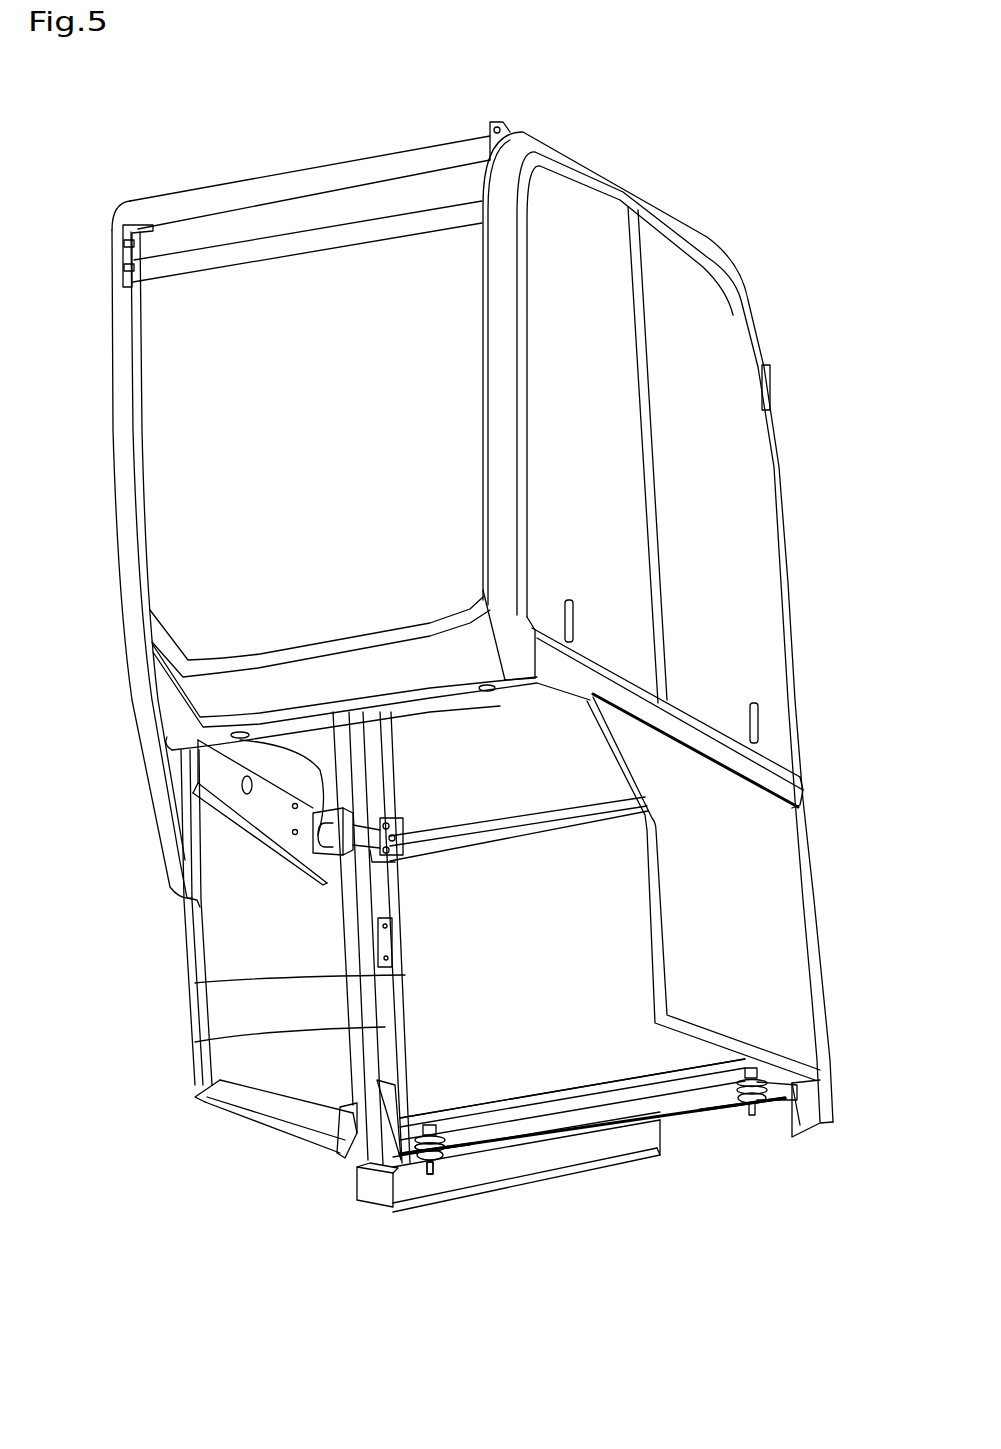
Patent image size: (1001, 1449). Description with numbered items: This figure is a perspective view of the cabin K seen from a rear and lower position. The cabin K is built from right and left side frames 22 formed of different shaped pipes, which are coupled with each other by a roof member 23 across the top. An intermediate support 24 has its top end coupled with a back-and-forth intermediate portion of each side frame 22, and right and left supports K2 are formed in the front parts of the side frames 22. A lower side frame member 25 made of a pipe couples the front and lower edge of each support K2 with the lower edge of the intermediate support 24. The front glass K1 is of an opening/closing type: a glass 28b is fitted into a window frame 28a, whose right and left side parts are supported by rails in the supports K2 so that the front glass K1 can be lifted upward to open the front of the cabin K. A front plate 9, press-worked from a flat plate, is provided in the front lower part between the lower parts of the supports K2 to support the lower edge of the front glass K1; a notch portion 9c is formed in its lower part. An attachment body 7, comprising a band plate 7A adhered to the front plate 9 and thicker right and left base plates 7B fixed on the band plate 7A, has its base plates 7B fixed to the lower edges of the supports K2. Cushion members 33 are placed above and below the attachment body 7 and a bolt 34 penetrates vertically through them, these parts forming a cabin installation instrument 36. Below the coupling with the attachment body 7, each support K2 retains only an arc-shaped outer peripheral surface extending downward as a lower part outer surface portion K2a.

The roof member 23 is at (327, 180).
The side frame 22 is at (677, 217).
The cabin K is at (776, 453).
The front glass K1 is at (92, 978).
The support K2 is at (787, 580).
The lower part outer surface portion K2a is at (377, 1197).
The intermediate support 24 is at (202, 910).
The lower side frame member 25 is at (227, 1097).
The window frame 28a is at (195, 1042).
The glass 28b is at (195, 983).
The attachment body 7 is at (603, 990).
The band plate 7A is at (548, 1140).
The base plate 7B is at (456, 1153).
The front plate 9 is at (582, 1165).
The notch portion 9c is at (660, 1138).
The cabin installation instrument 36 is at (752, 1122).
The cushion member 33 is at (420, 1163).
The bolt 34 is at (437, 1173).